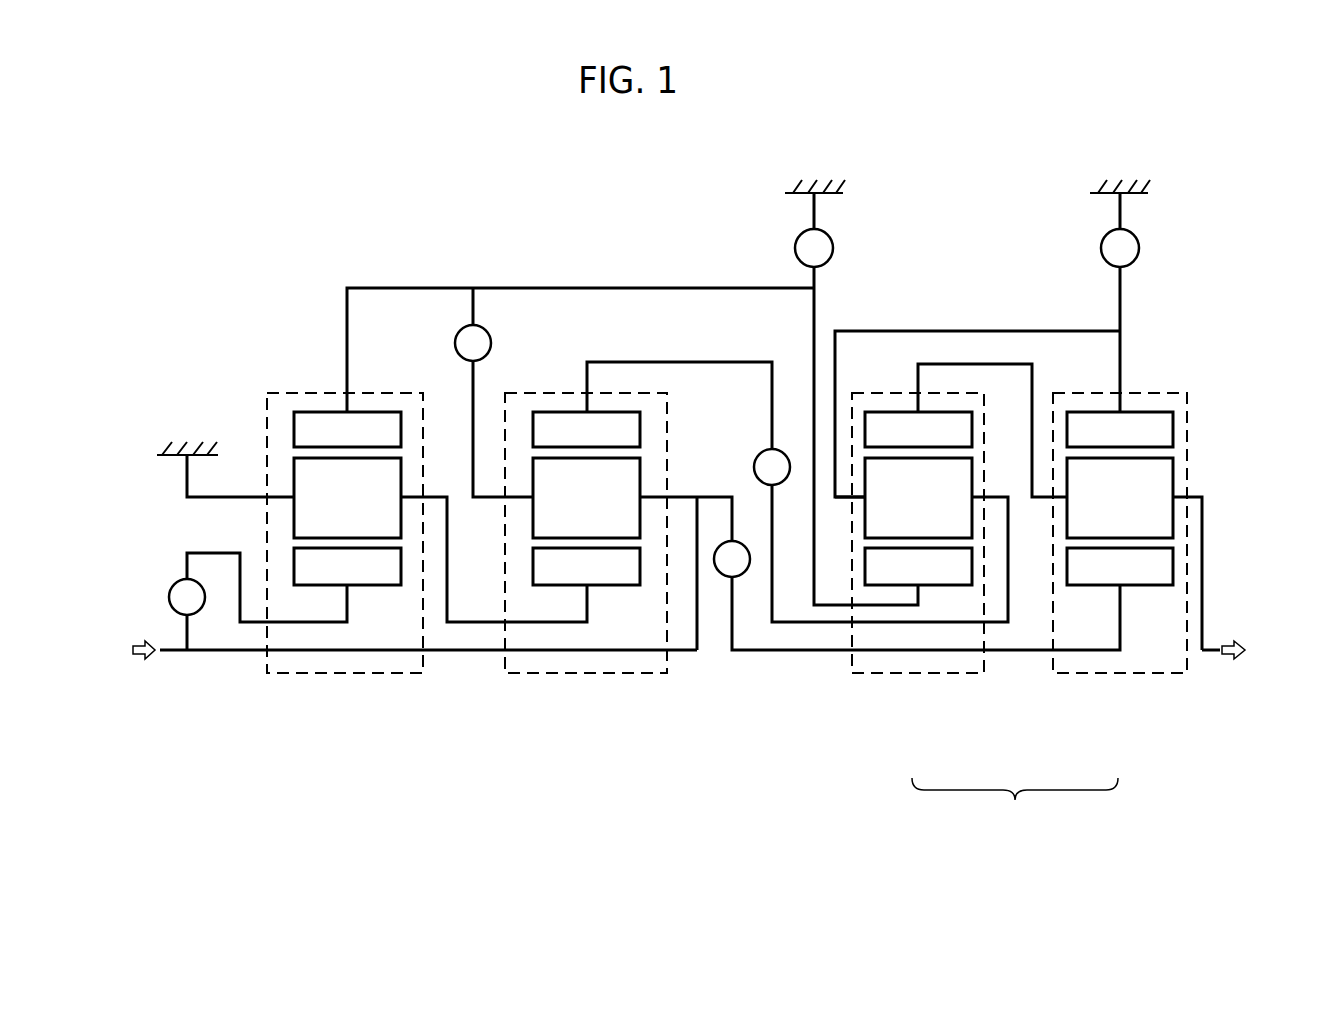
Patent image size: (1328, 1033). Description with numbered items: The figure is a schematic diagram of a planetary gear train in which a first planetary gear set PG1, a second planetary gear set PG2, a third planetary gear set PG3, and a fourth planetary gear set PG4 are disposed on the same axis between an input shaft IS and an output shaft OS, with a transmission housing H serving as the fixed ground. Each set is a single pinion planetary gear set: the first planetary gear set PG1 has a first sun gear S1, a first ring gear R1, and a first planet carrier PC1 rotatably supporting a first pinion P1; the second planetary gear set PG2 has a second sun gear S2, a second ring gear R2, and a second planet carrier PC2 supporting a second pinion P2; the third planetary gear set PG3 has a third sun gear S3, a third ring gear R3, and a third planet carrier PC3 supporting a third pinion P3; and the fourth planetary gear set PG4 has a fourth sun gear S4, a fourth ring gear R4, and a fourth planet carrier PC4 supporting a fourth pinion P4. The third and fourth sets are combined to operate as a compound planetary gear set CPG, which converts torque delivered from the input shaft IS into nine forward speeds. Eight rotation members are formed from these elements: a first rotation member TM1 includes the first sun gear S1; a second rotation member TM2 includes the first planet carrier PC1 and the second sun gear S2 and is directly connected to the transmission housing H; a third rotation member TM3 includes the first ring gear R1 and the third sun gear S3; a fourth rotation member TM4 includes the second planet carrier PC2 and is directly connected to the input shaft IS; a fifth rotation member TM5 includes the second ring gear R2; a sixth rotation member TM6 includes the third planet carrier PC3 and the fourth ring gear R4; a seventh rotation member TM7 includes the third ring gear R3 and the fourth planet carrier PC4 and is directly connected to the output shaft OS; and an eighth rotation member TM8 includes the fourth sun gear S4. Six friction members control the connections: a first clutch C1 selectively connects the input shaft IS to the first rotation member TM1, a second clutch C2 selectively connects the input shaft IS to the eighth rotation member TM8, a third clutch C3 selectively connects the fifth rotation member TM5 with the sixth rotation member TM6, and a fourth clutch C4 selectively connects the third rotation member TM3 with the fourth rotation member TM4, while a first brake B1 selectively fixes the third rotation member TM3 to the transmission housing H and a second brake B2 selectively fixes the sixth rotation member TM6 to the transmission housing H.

The first planetary gear set PG1 is at (345, 674).
The second planetary gear set PG2 is at (583, 674).
The third planetary gear set PG3 is at (917, 674).
The fourth planetary gear set PG4 is at (1127, 674).
The compound planetary gear set CPG is at (1015, 807).
The first ring gear R1 is at (347, 429).
The first pinion P1 is at (347, 498).
The first sun gear S1 is at (347, 566).
The second ring gear R2 is at (586, 429).
The second pinion P2 is at (586, 498).
The second sun gear S2 is at (586, 566).
The third ring gear R3 is at (918, 429).
The third pinion P3 is at (918, 498).
The third sun gear S3 is at (918, 566).
The fourth ring gear R4 is at (1120, 429).
The fourth pinion P4 is at (1120, 498).
The fourth sun gear S4 is at (1120, 566).
The first rotation member TM1 is at (349, 611).
The second rotation member TM2 is at (468, 625).
The third rotation member TM3 is at (589, 285).
The fourth rotation member TM4 is at (478, 500).
The fifth rotation member TM5 is at (664, 360).
The sixth rotation member TM6 is at (897, 329).
The seventh rotation member TM7 is at (976, 362).
The eighth rotation member TM8 is at (1122, 621).
The first planet carrier PC1 is at (214, 500).
The second planet carrier PC2 is at (656, 493).
The third planet carrier PC3 is at (834, 504).
The fourth planet carrier PC4 is at (1200, 492).
The first clutch C1 is at (187, 614).
The second clutch C2 is at (732, 559).
The third clutch C3 is at (772, 467).
The fourth clutch C4 is at (473, 343).
The first brake B1 is at (814, 248).
The second brake B2 is at (1120, 248).
The transmission housing H is at (182, 450).
The input shaft IS is at (165, 655).
The output shaft OS is at (1208, 657).